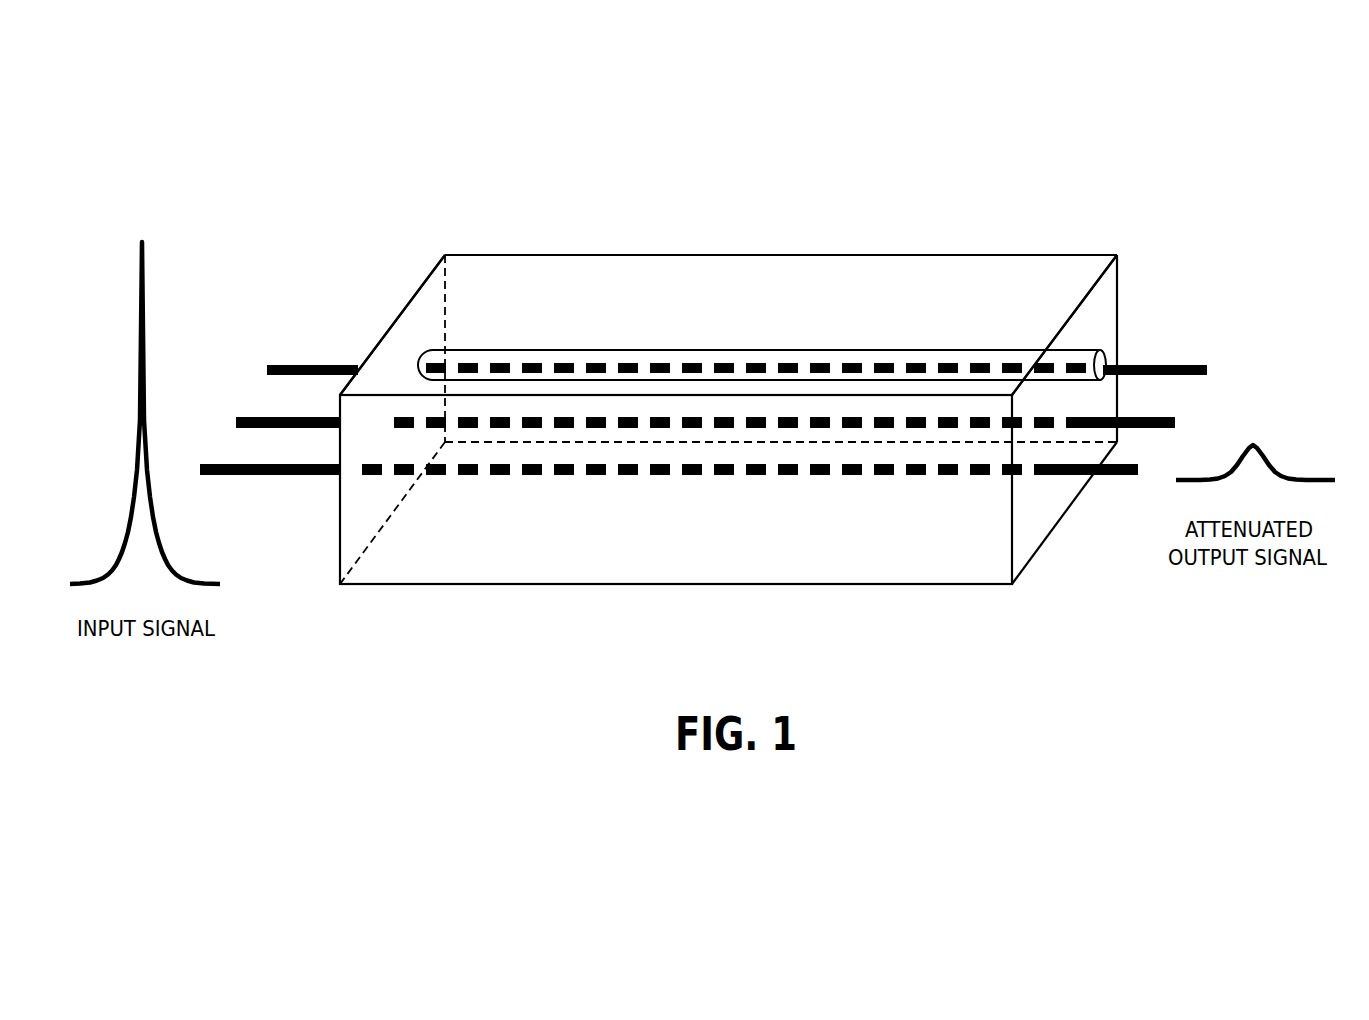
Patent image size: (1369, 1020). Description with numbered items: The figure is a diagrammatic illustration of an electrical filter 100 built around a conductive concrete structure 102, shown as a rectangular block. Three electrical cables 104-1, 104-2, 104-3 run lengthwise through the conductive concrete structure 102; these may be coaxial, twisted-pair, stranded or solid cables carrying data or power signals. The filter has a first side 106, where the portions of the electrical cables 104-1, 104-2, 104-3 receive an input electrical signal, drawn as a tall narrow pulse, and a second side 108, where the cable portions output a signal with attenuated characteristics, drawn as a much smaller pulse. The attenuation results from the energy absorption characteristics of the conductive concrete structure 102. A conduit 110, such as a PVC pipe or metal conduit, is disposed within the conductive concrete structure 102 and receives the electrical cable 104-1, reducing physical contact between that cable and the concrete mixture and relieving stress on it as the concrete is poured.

The electrical filter 100 is at (381, 187).
The conductive concrete structure 102 is at (585, 272).
The electrical cable 104-1 is at (291, 367).
The electrical cable 104-2 is at (255, 418).
The electrical cable 104-3 is at (229, 466).
The first side 106 is at (440, 258).
The second side 108 is at (1103, 302).
The conduit 110 is at (552, 350).